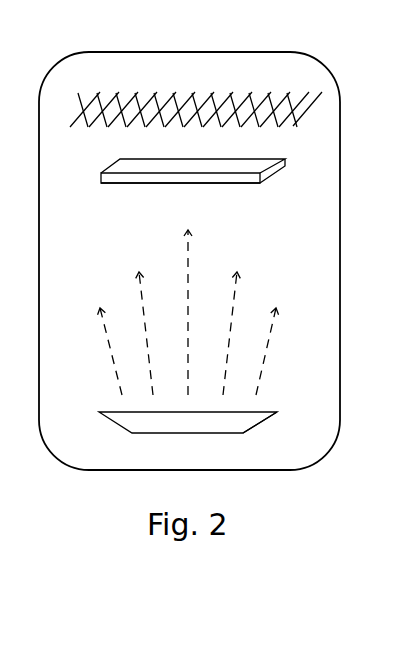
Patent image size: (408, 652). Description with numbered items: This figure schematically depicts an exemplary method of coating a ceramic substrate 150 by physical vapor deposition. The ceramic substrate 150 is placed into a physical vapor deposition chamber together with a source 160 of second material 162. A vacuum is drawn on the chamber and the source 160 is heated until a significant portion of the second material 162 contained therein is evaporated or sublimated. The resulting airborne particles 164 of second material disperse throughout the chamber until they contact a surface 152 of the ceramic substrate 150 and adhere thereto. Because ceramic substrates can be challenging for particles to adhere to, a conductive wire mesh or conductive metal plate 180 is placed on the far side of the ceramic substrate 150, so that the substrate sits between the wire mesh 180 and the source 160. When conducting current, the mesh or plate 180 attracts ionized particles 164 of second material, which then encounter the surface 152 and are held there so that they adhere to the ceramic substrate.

The conductive wire mesh or conductive metal plate 180 is at (184, 74).
The ceramic substrate 150 is at (128, 183).
The surface of the ceramic substrate 152 is at (250, 194).
The source of second material 160 is at (129, 418).
The second material 162 is at (243, 423).
The airborne particles of second material 164 is at (248, 355).